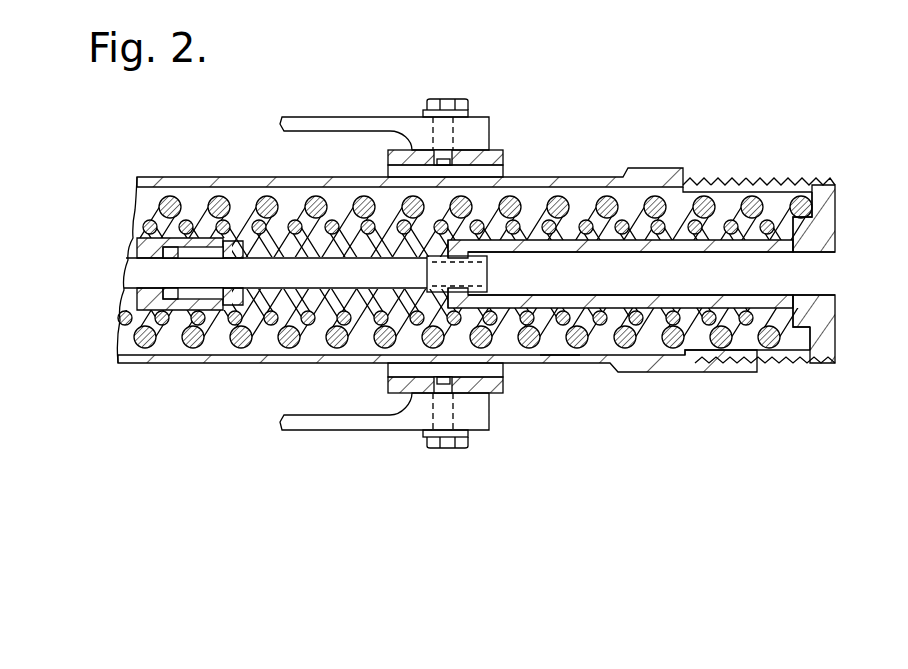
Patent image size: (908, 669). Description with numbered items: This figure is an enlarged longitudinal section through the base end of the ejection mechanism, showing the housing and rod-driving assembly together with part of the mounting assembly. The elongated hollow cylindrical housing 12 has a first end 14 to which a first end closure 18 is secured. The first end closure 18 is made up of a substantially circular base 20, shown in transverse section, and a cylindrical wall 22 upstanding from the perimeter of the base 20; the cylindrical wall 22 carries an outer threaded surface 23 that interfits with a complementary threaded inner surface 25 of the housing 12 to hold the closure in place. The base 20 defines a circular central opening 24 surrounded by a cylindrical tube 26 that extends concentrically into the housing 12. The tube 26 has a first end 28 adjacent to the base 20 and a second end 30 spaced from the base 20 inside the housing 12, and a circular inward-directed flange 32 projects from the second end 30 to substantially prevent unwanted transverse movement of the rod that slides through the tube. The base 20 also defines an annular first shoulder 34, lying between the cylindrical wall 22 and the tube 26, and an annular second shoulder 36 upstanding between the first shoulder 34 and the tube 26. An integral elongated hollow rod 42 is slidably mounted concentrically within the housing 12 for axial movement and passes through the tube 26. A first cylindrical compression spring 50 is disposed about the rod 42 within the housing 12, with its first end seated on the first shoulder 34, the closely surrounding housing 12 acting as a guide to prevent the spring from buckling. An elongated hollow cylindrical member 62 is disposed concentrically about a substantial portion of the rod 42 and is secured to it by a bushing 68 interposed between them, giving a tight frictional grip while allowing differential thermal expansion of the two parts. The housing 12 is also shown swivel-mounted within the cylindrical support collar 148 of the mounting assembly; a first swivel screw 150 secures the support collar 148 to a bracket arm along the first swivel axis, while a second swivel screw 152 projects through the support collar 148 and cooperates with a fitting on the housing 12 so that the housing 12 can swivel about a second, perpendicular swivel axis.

The housing 12 is at (208, 367).
The first end 14 is at (752, 180).
The first end closure 18 is at (828, 212).
The base 20 is at (833, 340).
The cylindrical wall 22 is at (792, 180).
The outer threaded surface 23 is at (732, 180).
The circular central opening 24 is at (822, 277).
The threaded inner surface 25 is at (695, 180).
The cylindrical tube 26 is at (689, 298).
The first end 28 is at (828, 301).
The second end 30 is at (457, 243).
The inward-directed flange 32 is at (468, 295).
The first shoulder 34 is at (808, 343).
The second shoulder 36 is at (795, 225).
The rod 42 is at (142, 277).
The first compression spring 50 is at (556, 356).
The hollow cylindrical member 62 is at (135, 241).
The bushing 68 is at (165, 292).
The support collar 148 is at (388, 153).
The first swivel screw 150 is at (433, 448).
The second swivel screw 152 is at (458, 103).